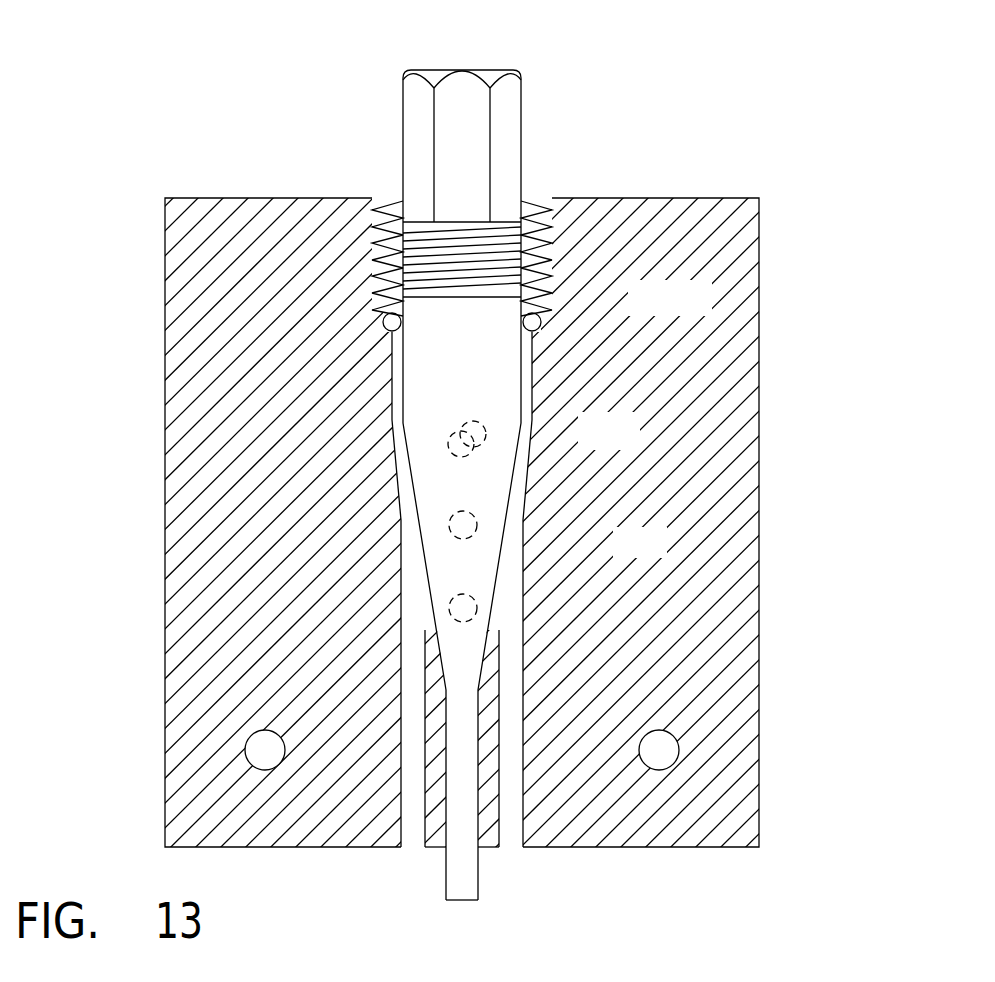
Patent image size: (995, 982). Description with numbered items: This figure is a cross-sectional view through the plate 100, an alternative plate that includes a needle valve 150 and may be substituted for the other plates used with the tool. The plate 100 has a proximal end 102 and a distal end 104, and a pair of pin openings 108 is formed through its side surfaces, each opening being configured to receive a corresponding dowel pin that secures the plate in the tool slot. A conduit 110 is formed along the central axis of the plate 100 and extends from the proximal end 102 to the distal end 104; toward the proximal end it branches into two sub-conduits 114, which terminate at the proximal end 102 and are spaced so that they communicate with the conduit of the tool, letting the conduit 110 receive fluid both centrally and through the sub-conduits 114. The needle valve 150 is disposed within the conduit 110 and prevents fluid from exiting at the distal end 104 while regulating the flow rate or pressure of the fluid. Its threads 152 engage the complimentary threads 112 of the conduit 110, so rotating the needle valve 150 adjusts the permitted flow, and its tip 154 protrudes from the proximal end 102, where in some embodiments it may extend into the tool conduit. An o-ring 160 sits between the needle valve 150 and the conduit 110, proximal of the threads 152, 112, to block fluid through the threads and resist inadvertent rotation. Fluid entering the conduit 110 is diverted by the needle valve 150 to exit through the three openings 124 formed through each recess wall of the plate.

The plate 100 is at (722, 166).
The proximal end 102 is at (677, 847).
The distal end 104 is at (287, 197).
The pin openings 108 is at (668, 752).
The conduit 110 is at (508, 535).
The complimentary threads 112 is at (535, 200).
The sub-conduits 114 is at (410, 847).
The openings 124 is at (475, 423).
The needle valve 150 is at (490, 472).
The threads 152 is at (425, 233).
The tip 154 is at (470, 90).
The o-ring 160 is at (540, 322).